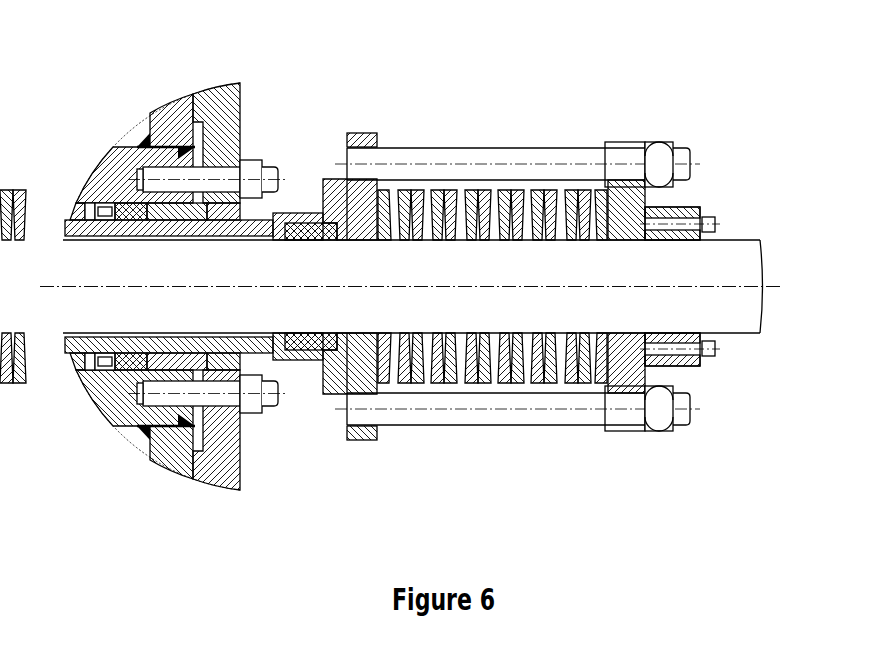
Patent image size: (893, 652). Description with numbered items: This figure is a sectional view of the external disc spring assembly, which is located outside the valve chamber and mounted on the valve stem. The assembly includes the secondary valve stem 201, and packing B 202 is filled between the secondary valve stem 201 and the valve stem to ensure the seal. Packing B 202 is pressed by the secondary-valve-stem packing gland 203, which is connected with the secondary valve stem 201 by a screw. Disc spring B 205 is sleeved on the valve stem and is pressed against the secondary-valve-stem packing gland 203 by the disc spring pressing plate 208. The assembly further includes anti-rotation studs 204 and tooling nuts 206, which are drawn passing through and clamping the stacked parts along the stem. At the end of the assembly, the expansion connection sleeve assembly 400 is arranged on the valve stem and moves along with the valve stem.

The secondary valve stem 201 is at (333, 394).
The packing B 202 is at (290, 212).
The secondary-valve-stem packing gland 203 is at (358, 140).
The anti-rotation studs 204 is at (542, 163).
The disc spring B 205 is at (519, 382).
The tooling nuts 206 is at (662, 155).
The disc spring pressing plate 208 is at (631, 393).
The expansion connection sleeve assembly 400 is at (675, 207).